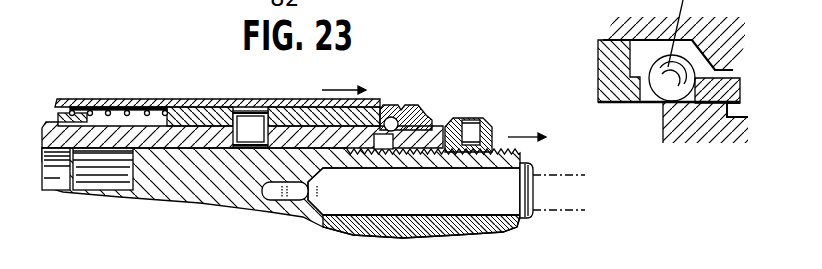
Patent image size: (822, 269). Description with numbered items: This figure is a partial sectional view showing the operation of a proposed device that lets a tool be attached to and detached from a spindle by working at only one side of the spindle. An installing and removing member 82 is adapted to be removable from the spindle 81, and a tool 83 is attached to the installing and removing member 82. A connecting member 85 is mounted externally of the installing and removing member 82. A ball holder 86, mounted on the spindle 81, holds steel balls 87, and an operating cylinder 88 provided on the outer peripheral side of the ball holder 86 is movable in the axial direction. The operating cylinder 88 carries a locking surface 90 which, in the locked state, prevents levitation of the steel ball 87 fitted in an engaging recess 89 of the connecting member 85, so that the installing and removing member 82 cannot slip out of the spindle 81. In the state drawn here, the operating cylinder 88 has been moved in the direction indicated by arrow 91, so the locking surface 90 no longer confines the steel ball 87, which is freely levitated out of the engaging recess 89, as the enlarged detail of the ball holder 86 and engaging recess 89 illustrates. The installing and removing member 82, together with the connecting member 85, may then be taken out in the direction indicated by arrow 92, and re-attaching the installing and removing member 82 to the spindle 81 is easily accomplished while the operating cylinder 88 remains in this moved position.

The spindle 81 is at (50, 128).
The installing and removing member 82 is at (217, 183).
The tool 83 is at (552, 183).
The connecting member 85 is at (487, 118).
The ball holder 86 is at (385, 104).
The steel ball 87 is at (577, 69).
The operating cylinder 88 is at (157, 99).
The engaging recess 89 is at (747, 100).
The locking surface 90 is at (722, 67).
The arrow 91 is at (333, 88).
The arrow 92 is at (523, 133).